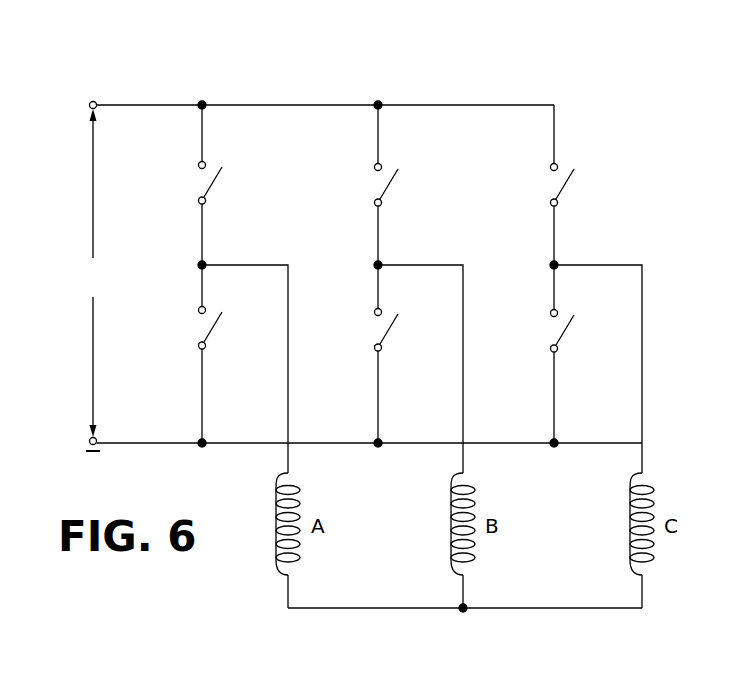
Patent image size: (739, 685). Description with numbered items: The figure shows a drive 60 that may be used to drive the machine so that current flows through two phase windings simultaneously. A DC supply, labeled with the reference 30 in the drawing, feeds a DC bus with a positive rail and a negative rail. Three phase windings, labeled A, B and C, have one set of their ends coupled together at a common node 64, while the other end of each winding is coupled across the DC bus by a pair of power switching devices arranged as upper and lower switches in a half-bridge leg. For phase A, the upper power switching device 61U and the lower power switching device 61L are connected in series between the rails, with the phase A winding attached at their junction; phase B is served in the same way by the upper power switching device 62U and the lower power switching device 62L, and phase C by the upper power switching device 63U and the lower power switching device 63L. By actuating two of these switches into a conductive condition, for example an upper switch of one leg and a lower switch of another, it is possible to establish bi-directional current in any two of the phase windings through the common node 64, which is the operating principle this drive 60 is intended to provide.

The DC voltage source 30 is at (70, 260).
The drive 60 is at (173, 98).
The power switching device 61U is at (212, 182).
The power switching device 61L is at (212, 327).
The power switching device 62U is at (388, 184).
The power switching device 62L is at (388, 329).
The power switching device 63U is at (564, 184).
The power switching device 63L is at (564, 330).
The common node 64 is at (466, 611).